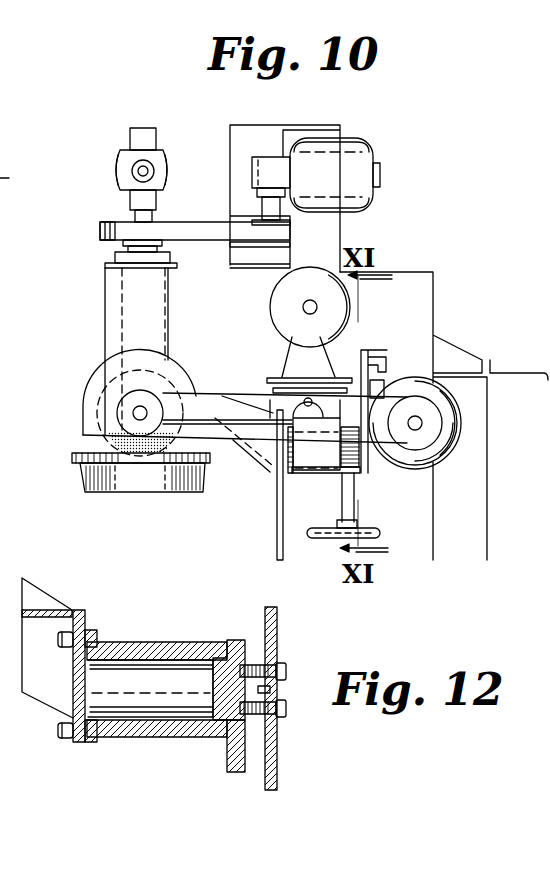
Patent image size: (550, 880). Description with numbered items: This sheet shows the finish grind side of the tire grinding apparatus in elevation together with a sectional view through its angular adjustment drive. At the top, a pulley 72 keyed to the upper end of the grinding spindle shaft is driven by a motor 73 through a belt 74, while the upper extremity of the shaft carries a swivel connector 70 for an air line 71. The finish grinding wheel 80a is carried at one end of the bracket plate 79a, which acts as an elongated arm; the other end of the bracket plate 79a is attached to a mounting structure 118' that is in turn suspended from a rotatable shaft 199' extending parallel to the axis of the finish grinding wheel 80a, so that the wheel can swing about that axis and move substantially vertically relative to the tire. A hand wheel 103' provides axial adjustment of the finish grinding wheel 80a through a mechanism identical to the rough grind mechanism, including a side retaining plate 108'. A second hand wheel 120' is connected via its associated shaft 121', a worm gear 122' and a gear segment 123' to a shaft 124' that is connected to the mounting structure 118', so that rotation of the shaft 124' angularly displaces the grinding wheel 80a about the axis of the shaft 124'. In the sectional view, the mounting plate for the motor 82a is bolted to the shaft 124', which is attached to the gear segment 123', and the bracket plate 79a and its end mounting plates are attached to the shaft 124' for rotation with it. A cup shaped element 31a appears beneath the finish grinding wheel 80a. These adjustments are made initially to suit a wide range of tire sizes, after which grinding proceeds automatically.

In FIG. 10, the swivel connector 70 is at (118, 163).
In FIG. 10, the air line 71 is at (154, 171).
In FIG. 10, the pulley 72 is at (115, 222).
In FIG. 10, the belt 74 is at (210, 232).
In FIG. 10, the side retaining plate 108' is at (26, 177).
In FIG. 10, the motor 73 is at (368, 157).
In FIG. 10, the hand wheel 103' is at (347, 307).
In FIG. 10, the bracket plate 79a is at (173, 372).
In FIG. 12, the bracket plate 79a is at (33, 595).
In FIG. 10, the rotatable shaft 199' is at (274, 373).
In FIG. 10, the mounting structure 118' is at (263, 485).
In FIG. 10, the shaft 124' is at (321, 471).
In FIG. 12, the shaft 124' is at (157, 666).
In FIG. 10, the worm gear 122' is at (384, 461).
In FIG. 10, the shaft 121' is at (378, 500).
In FIG. 10, the motor 82a is at (433, 453).
In FIG. 10, the grinding cup 31a is at (108, 478).
In FIG. 10, the finish grinding wheel 80a is at (143, 445).
In FIG. 10, the hand wheel 120' is at (383, 557).
In FIG. 12, the gear segment 123' is at (203, 756).